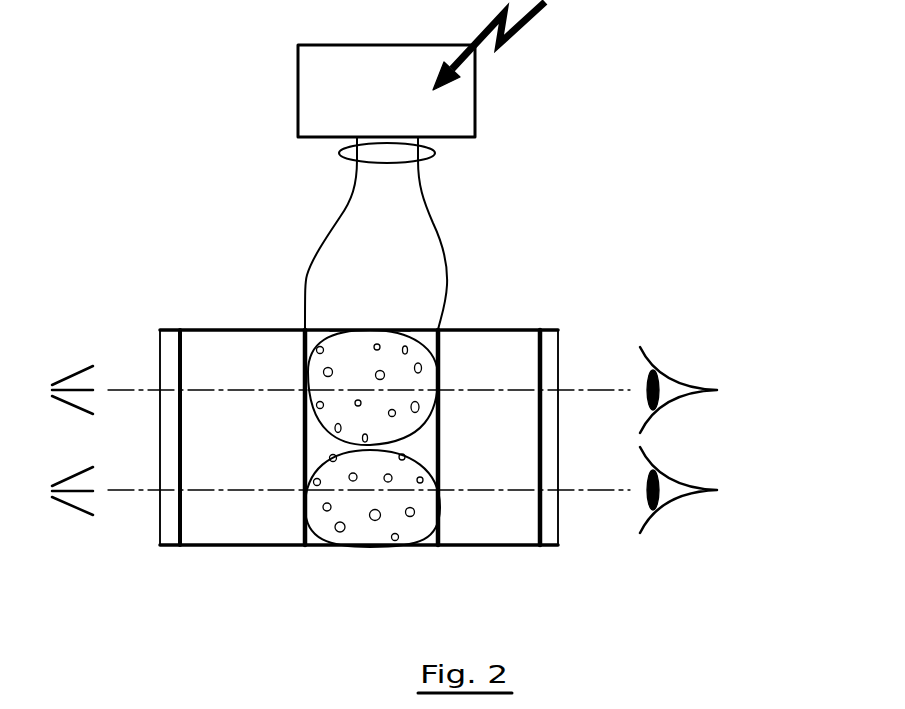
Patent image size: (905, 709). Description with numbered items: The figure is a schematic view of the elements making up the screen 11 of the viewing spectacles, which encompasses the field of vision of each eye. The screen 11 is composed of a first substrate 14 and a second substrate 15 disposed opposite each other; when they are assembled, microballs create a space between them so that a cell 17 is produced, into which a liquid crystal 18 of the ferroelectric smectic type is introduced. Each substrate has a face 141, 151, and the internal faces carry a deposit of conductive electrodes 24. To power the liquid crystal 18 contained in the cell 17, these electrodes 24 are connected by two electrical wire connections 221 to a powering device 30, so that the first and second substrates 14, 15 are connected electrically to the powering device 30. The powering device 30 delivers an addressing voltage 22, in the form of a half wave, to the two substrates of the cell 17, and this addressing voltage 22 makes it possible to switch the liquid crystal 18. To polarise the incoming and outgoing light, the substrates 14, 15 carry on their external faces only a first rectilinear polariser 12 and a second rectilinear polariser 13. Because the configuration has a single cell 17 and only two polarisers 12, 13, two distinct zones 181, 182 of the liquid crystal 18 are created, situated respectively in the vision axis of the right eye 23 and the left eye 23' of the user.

The screen 11 is at (580, 279).
The first rectilinear polariser 12 is at (167, 547).
The second rectilinear polariser 13 is at (546, 548).
The first substrate 14 is at (208, 330).
The face of first substrate 141 is at (187, 525).
The second substrate 15 is at (498, 330).
The face of second substrate 151 is at (528, 515).
The cell 17 is at (323, 330).
The liquid crystal 18 is at (363, 352).
The first zone of liquid crystal 181 is at (407, 330).
The second zone of liquid crystal 182 is at (355, 550).
The addressing voltage 22 is at (387, 168).
The electrical wire connections 221 is at (352, 197).
The right eye 23 is at (678, 329).
The left eye 23' is at (678, 541).
The conductive electrodes 24 is at (298, 522).
The powering device 30 is at (298, 80).